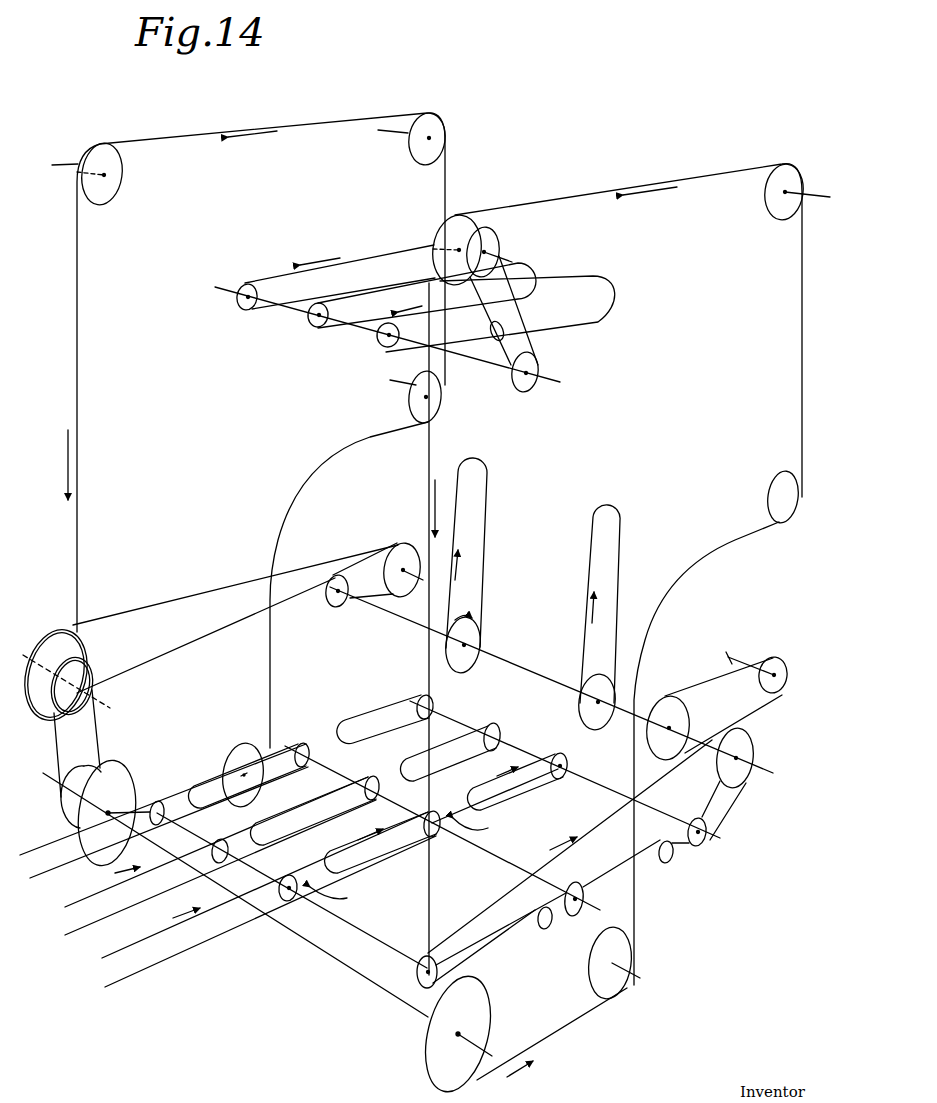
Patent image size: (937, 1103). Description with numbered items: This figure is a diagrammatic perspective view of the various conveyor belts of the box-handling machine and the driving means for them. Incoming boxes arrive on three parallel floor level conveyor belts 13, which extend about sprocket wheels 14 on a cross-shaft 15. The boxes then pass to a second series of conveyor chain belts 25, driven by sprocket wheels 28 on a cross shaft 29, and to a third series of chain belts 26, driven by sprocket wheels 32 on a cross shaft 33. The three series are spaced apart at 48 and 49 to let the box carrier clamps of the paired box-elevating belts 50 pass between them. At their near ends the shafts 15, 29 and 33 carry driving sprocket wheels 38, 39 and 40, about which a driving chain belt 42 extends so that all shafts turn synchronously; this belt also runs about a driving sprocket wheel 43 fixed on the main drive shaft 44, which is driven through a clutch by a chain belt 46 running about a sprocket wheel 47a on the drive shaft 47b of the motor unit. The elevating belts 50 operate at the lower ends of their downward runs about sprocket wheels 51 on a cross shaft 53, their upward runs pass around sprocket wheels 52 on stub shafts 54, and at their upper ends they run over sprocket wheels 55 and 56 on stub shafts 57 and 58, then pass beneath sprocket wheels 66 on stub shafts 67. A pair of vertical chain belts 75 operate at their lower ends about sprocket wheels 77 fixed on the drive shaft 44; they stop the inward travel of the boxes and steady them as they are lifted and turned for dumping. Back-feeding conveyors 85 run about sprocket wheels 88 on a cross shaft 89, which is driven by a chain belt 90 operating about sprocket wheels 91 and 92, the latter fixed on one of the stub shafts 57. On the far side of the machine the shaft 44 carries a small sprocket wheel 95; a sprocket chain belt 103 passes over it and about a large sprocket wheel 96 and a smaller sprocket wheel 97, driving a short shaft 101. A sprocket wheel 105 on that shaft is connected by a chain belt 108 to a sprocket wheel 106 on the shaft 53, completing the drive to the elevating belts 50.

The conveyor belts 13 is at (78, 897).
The sprocket wheels 14 is at (282, 905).
The cross-shaft 15 is at (350, 968).
The conveyor chain belts 25 is at (343, 825).
The chain belts 26 is at (358, 720).
The sprocket wheels 28 is at (368, 782).
The cross shaft 29 is at (500, 860).
The sprocket wheels 32 is at (570, 758).
The cross shaft 33 is at (657, 810).
The driving sprocket wheel 38 is at (440, 968).
The driving sprocket wheel 39 is at (580, 882).
The driving sprocket wheel 40 is at (710, 825).
The driving chain belt 42 is at (490, 930).
The driving sprocket wheel 43 is at (752, 750).
The drive shaft 44 is at (498, 670).
The chain belt 46 is at (708, 690).
The sprocket wheel 47a is at (784, 668).
The drive shaft of the motor unit 47b is at (735, 658).
The space 48 is at (341, 894).
The space 49 is at (483, 828).
The box-elevating belts 50 is at (182, 138).
The sprocket wheels 51 is at (135, 790).
The sprocket wheels 52 is at (245, 750).
The cross shaft 53 is at (395, 1020).
The stub shafts 54 is at (226, 765).
The sprocket wheels 55 is at (108, 190).
The sprocket wheels 56 is at (443, 123).
The stub shafts 57 is at (70, 164).
The stub shafts 58 is at (393, 116).
The sprocket wheels 66 is at (413, 411).
The stub shafts 67 is at (390, 380).
The chain belts 75 is at (485, 592).
The sprocket wheels 77 is at (472, 632).
The back-feeding conveyors 85 is at (278, 272).
The sprocket wheels 88 is at (245, 310).
The cross shaft 89 is at (350, 330).
The chain belt 90 is at (530, 324).
The sprocket wheel 91 is at (540, 364).
The sprocket wheel 92 is at (498, 240).
The sprocket wheel 95 is at (335, 606).
The sprocket wheel 96 is at (70, 634).
The sprocket wheel 97 is at (380, 565).
The short shaft 101 is at (110, 702).
The sprocket chain belt 103 is at (165, 612).
The sprocket wheel 105 is at (90, 664).
The sprocket wheel 106 is at (110, 775).
The chain belt 108 is at (98, 732).